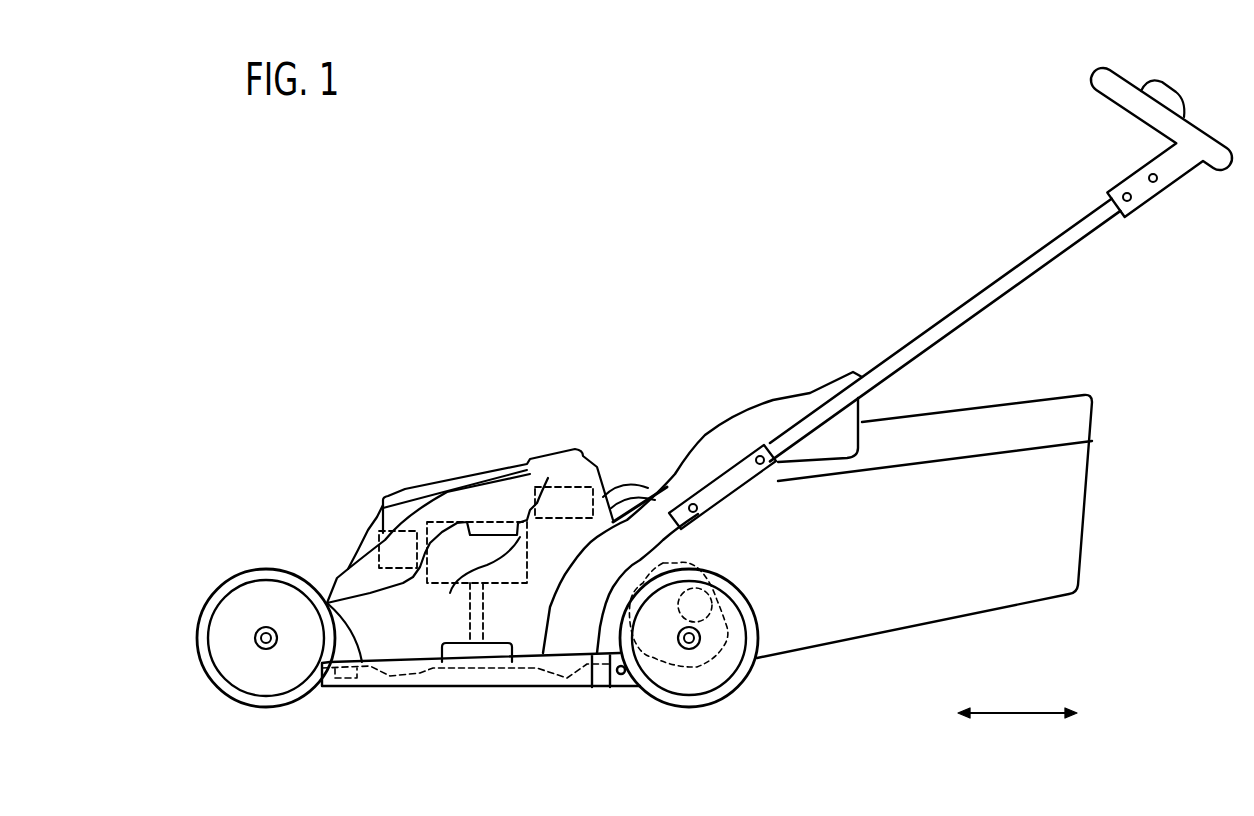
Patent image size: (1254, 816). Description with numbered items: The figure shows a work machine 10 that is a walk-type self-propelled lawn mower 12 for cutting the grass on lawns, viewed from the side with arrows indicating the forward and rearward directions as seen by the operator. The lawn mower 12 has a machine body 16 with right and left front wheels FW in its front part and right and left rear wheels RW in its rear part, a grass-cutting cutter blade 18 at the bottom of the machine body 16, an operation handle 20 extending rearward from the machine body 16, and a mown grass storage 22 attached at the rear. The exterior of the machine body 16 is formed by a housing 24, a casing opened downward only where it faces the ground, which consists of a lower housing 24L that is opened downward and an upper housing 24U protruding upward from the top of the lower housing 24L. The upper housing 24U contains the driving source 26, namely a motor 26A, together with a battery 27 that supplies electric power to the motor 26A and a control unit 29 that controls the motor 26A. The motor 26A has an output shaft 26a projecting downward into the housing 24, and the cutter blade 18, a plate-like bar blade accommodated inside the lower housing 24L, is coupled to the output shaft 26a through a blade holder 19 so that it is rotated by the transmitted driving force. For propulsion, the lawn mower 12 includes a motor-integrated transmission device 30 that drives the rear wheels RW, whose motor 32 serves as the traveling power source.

The work machine 10 is at (541, 232).
The lawn mower 12 is at (702, 404).
The machine body 16 is at (345, 497).
The cutter blade 18 is at (481, 672).
The blade holder 19 is at (453, 645).
The operation handle 20 is at (1003, 275).
The mown grass storage 22 is at (1070, 510).
The housing 24 is at (478, 471).
The upper housing 24U is at (516, 492).
The lower housing 24L is at (433, 687).
The driving source 26 is at (463, 502).
The motor 26A is at (490, 520).
The output shaft 26a is at (478, 610).
The battery 27 is at (378, 556).
The control unit 29 is at (566, 486).
The transmission device 30 is at (722, 612).
The motor 32 is at (707, 567).
The front wheels FW is at (242, 590).
The rear wheels RW is at (741, 688).